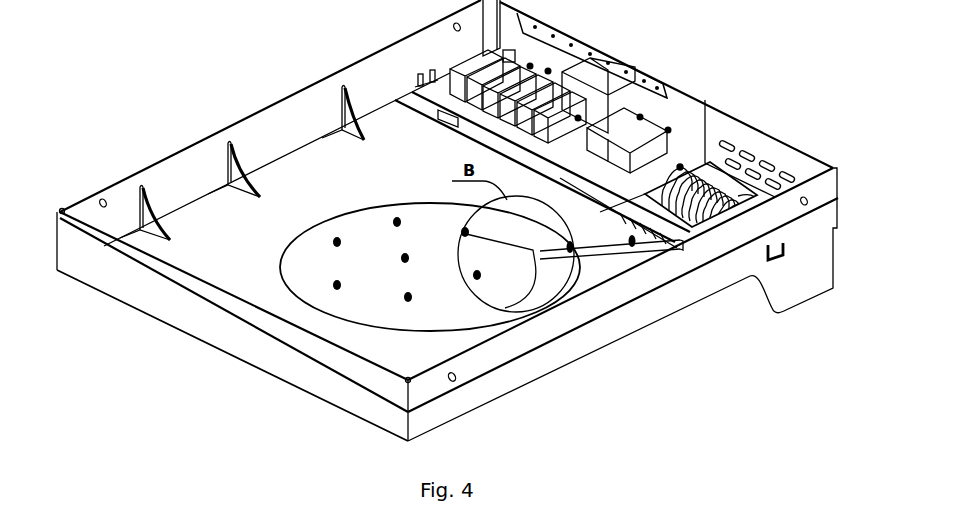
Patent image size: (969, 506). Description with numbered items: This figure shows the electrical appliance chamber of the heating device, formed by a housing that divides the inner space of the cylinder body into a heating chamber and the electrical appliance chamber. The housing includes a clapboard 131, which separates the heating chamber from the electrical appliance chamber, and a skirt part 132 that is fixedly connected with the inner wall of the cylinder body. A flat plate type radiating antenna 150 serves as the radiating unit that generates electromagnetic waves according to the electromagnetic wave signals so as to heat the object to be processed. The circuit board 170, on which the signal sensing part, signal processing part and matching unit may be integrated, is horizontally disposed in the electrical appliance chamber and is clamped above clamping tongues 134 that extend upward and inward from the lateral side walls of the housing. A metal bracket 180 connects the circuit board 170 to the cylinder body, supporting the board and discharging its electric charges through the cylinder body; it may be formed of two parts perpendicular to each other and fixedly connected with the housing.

The clapboard 131 is at (213, 213).
The skirt part 132 is at (587, 337).
The clamping tongue 134 is at (423, 72).
The flat plate type radiating antenna 150 is at (362, 223).
The circuit board 170 is at (673, 160).
The metal bracket 180 is at (587, 53).